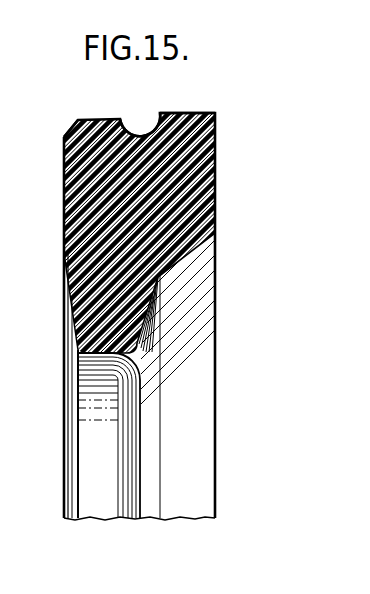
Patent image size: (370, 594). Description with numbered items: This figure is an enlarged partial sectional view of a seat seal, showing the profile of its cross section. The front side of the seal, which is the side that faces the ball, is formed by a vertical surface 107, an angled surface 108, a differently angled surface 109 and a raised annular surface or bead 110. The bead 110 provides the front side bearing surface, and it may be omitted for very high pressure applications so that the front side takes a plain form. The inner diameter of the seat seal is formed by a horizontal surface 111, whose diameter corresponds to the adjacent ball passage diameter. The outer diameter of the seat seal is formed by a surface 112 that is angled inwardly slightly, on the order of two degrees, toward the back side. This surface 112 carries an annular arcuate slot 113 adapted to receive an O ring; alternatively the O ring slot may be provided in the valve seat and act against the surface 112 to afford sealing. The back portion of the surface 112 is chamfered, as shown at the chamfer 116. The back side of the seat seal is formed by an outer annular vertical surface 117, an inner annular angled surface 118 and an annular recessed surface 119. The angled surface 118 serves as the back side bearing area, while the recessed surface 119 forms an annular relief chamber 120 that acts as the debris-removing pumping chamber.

The vertical surface 107 is at (217, 158).
The angled surface 108 is at (198, 234).
The differently angled surface 109 is at (159, 306).
The raised annular surface or bead 110 is at (137, 351).
The horizontal surface 111 is at (98, 355).
The outer diameter surface 112 is at (194, 113).
The annular arcuate slot 113 is at (127, 124).
The chamfer 116 is at (77, 126).
The outer annular vertical surface 117 is at (64, 190).
The inner annular angled surface 118 is at (78, 347).
The annular recessed surface 119 is at (70, 273).
The annular relief chamber 120 is at (67, 311).